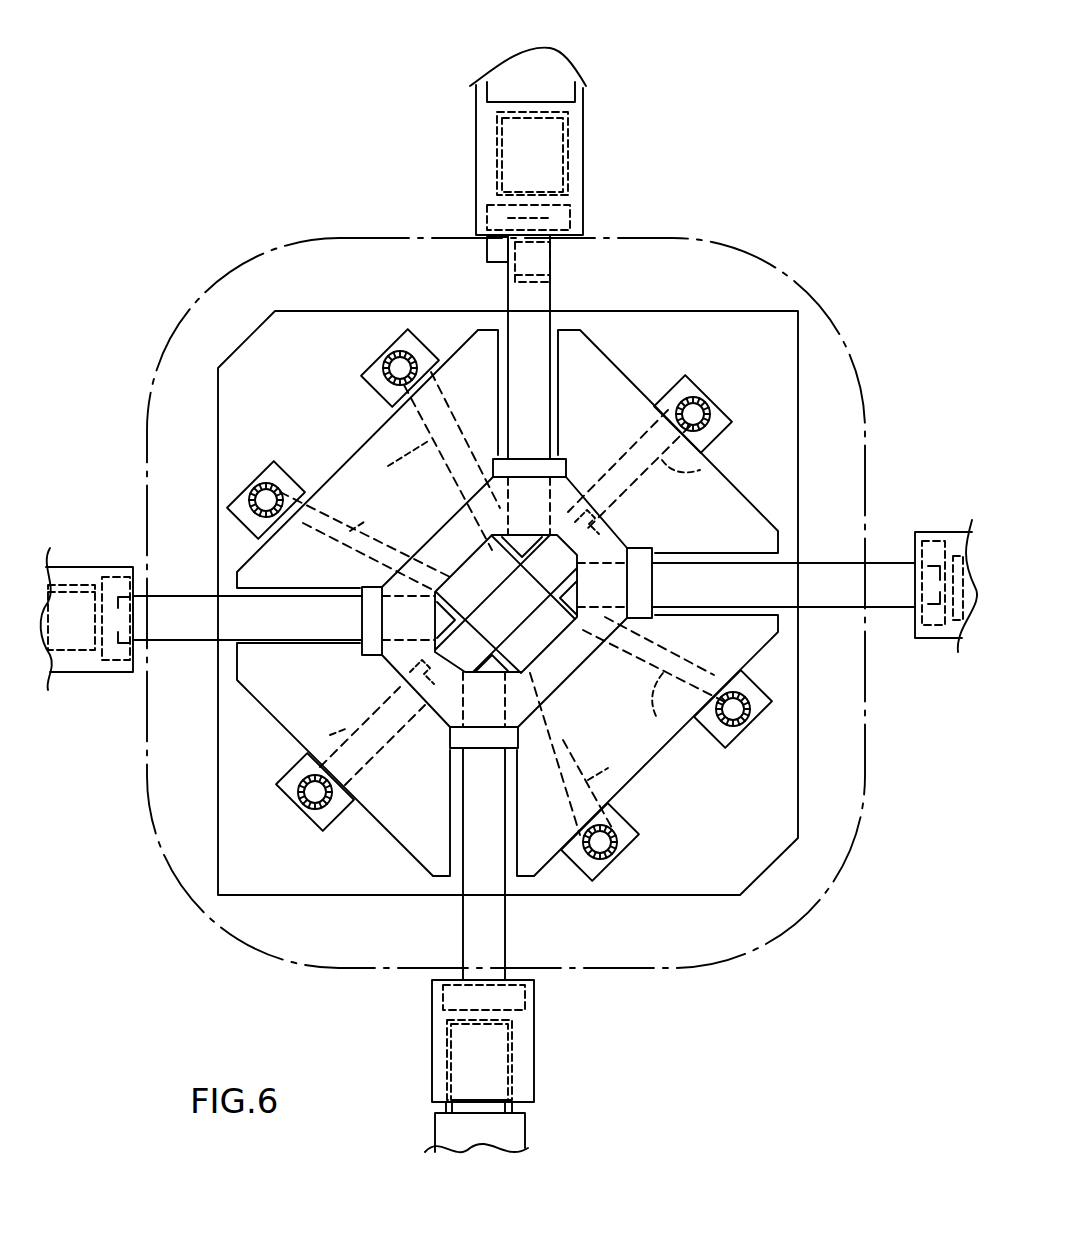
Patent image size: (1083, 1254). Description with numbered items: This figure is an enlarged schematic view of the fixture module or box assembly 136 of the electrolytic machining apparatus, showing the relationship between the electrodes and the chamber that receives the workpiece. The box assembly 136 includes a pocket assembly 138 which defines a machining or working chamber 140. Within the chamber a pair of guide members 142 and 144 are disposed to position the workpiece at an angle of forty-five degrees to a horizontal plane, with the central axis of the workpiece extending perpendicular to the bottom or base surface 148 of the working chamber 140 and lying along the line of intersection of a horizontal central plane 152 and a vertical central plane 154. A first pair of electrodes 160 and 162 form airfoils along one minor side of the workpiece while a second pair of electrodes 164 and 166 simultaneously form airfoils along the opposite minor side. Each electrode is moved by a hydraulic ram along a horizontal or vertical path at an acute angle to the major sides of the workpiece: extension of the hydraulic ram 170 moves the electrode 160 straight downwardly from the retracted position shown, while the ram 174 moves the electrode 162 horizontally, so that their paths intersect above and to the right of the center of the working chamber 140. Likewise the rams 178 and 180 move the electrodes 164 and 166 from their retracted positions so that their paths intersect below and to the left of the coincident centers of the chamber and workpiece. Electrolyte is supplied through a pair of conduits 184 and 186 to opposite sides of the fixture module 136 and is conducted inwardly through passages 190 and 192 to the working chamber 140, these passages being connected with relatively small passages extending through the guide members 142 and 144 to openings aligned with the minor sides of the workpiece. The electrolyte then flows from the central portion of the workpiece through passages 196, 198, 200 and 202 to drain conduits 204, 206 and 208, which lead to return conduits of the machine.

The box assembly 136 is at (652, 365).
The pocket assembly 138 is at (372, 668).
The working chamber 140 is at (598, 545).
The guide member 142 is at (540, 650).
The guide member 144 is at (555, 622).
The base surface 148 is at (553, 537).
The horizontal central plane 152 is at (455, 590).
The vertical central plane 154 is at (495, 582).
The electrode 160 is at (543, 303).
The electrode 162 is at (818, 578).
The electrode 164 is at (478, 935).
The electrode 166 is at (180, 628).
The hydraulic ram 170 is at (578, 80).
The ram 174 is at (955, 530).
The ram 178 is at (485, 1133).
The ram 180 is at (62, 567).
The conduit 184 is at (302, 808).
The conduit 186 is at (708, 400).
The passage 190 is at (375, 722).
The passage 192 is at (705, 468).
The passage 196 is at (365, 540).
The passage 198 is at (436, 461).
The passage 200 is at (578, 754).
The passage 202 is at (677, 682).
The drain conduit 204 is at (272, 484).
The drain conduit 206 is at (392, 355).
The drain conduit 208 is at (620, 852).